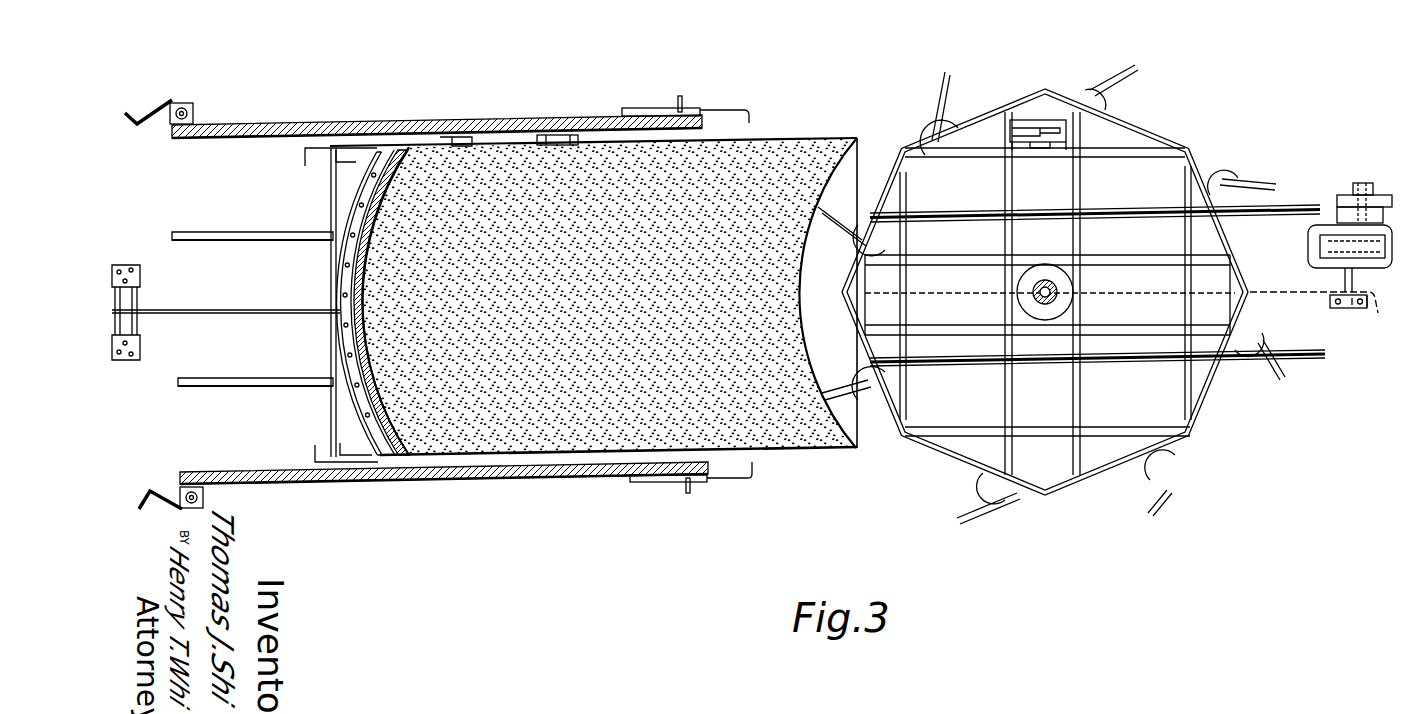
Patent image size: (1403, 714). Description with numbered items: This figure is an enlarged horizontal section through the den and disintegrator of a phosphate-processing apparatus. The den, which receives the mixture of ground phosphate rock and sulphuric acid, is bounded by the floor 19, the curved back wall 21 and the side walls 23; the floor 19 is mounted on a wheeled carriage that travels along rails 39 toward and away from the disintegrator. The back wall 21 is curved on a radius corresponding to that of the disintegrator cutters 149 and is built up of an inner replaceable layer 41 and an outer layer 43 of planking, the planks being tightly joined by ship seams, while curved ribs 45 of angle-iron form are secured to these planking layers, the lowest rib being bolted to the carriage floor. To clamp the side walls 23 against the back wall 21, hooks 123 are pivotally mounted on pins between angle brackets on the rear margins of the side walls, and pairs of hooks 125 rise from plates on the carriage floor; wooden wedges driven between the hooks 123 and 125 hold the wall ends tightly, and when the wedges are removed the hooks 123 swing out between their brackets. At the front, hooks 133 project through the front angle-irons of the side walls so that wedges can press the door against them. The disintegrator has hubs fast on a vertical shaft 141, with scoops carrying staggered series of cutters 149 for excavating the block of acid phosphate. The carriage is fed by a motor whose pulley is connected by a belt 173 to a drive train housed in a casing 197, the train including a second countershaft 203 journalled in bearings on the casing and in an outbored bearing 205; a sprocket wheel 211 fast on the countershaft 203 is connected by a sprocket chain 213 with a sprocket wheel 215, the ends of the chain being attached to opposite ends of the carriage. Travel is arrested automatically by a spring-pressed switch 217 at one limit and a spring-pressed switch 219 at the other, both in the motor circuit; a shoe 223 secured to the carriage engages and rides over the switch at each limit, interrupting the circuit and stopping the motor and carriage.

The floor 19 is at (857, 450).
The back wall 21 is at (333, 290).
The side walls 23 is at (453, 121).
The rails 39 is at (248, 232).
The inner replaceable layer 41 is at (360, 314).
The outer layer 43 is at (353, 338).
The curved ribs 45 is at (338, 272).
The hooks 123 is at (150, 99).
The hooks 125 is at (303, 154).
The hooks 133 is at (722, 109).
The vertical shaft 141 is at (1047, 286).
The cutters 149 is at (1270, 188).
The belt 173 is at (1372, 195).
The casing 197 is at (1318, 244).
The second countershaft 203 is at (1345, 276).
The outbored bearing 205 is at (1338, 307).
The sprocket wheel 211 is at (1363, 314).
The sprocket chain 213 is at (1292, 291).
The sprocket wheel 215 is at (135, 312).
The spring-pressed switch 217 is at (471, 137).
The spring-pressed switch 219 is at (1000, 128).
The shoe 223 is at (560, 134).